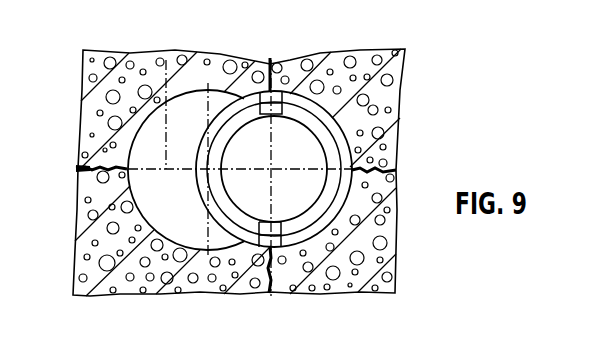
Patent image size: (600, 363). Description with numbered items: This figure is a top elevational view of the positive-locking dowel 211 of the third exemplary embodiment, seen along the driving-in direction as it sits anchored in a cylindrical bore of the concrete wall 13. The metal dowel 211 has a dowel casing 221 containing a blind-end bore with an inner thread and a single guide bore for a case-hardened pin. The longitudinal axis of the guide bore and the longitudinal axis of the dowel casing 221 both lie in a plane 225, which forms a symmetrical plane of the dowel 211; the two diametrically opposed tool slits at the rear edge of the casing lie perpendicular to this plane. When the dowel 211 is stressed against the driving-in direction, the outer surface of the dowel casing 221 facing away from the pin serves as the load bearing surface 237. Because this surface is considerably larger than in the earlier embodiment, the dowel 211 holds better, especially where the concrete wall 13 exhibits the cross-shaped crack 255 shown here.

The concrete wall 13 is at (127, 66).
The dowel 211 is at (120, 111).
The dowel casing 221 is at (354, 124).
The plane 225 is at (167, 60).
The load bearing surface 237 is at (131, 145).
The cross-shaped crack 255 is at (77, 170).